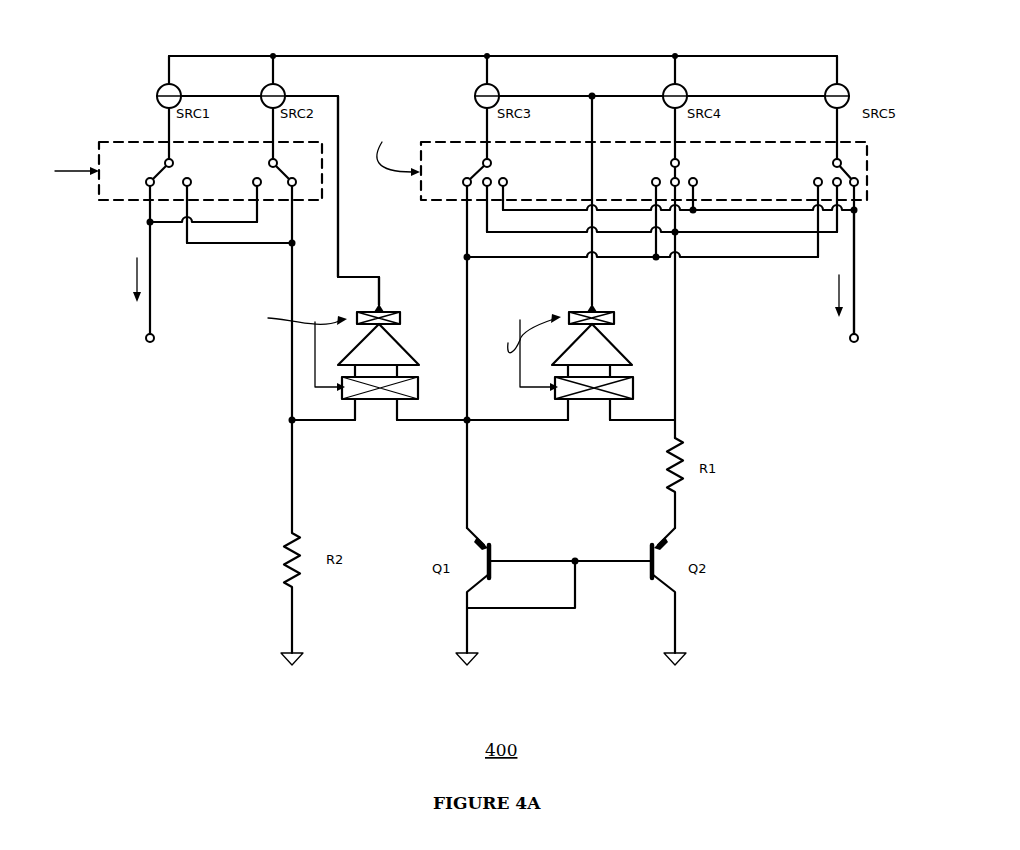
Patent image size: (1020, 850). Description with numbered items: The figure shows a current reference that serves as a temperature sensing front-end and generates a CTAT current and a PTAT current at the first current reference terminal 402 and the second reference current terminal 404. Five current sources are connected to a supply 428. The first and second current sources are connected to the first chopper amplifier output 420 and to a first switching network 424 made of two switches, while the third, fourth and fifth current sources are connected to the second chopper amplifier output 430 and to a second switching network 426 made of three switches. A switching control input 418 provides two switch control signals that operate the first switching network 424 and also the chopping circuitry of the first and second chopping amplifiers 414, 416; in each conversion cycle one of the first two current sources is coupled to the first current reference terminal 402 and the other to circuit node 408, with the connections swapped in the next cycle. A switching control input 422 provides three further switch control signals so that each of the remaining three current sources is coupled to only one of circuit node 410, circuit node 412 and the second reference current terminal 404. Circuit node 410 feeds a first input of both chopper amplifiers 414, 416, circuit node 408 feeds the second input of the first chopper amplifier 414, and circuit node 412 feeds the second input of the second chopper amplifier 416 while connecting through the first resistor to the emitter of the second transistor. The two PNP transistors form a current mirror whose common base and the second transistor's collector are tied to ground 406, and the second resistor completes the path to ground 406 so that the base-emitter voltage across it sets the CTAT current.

The first current reference terminal 402 is at (146, 339).
The second reference current terminal 404 is at (858, 342).
The ground 406 is at (294, 625).
The circuit node 408 is at (290, 420).
The circuit node 410 is at (466, 422).
The circuit node 412 is at (677, 420).
The first chopping amplifier 414 is at (413, 347).
The second chopping amplifier 416 is at (623, 347).
The switching control input 418 is at (72, 172).
The first chopper amplifier output 420 is at (340, 265).
The switching control input 422 is at (388, 158).
The first switching network 424 is at (127, 141).
The second switching network 426 is at (447, 142).
The supply 428 is at (405, 56).
The second chopper amplifier output 430 is at (623, 96).